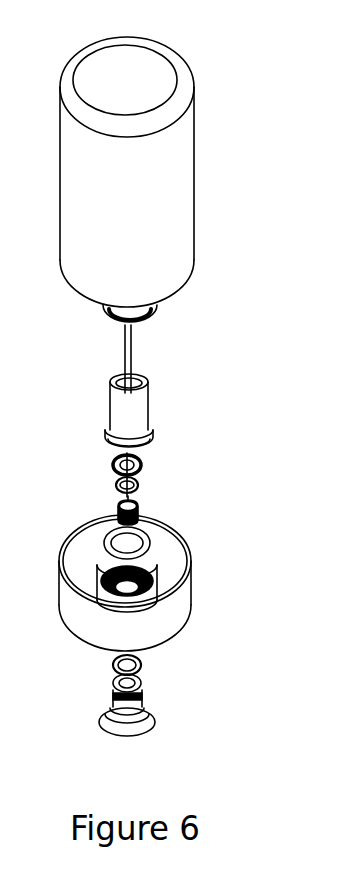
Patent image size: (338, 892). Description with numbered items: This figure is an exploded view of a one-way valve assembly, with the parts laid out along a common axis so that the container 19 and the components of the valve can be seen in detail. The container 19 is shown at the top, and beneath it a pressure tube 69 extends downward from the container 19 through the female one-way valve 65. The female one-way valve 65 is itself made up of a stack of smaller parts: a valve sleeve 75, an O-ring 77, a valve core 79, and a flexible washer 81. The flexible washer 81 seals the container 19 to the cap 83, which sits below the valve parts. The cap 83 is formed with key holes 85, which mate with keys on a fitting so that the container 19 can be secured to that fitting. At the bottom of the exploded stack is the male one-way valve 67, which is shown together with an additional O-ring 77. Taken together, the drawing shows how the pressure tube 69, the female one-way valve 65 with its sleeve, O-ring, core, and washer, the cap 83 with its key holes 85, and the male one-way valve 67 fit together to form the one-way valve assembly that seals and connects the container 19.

The container 19 is at (146, 204).
The pressure tube 69 is at (131, 353).
The female one-way valve 65 is at (140, 413).
The valve sleeve 75 is at (141, 465).
The O-ring 77 is at (138, 484).
The valve core 79 is at (140, 508).
The flexible washer 81 is at (150, 540).
The cap 83 is at (188, 577).
The key holes 85 is at (160, 582).
The male one-way valve 67 is at (150, 710).